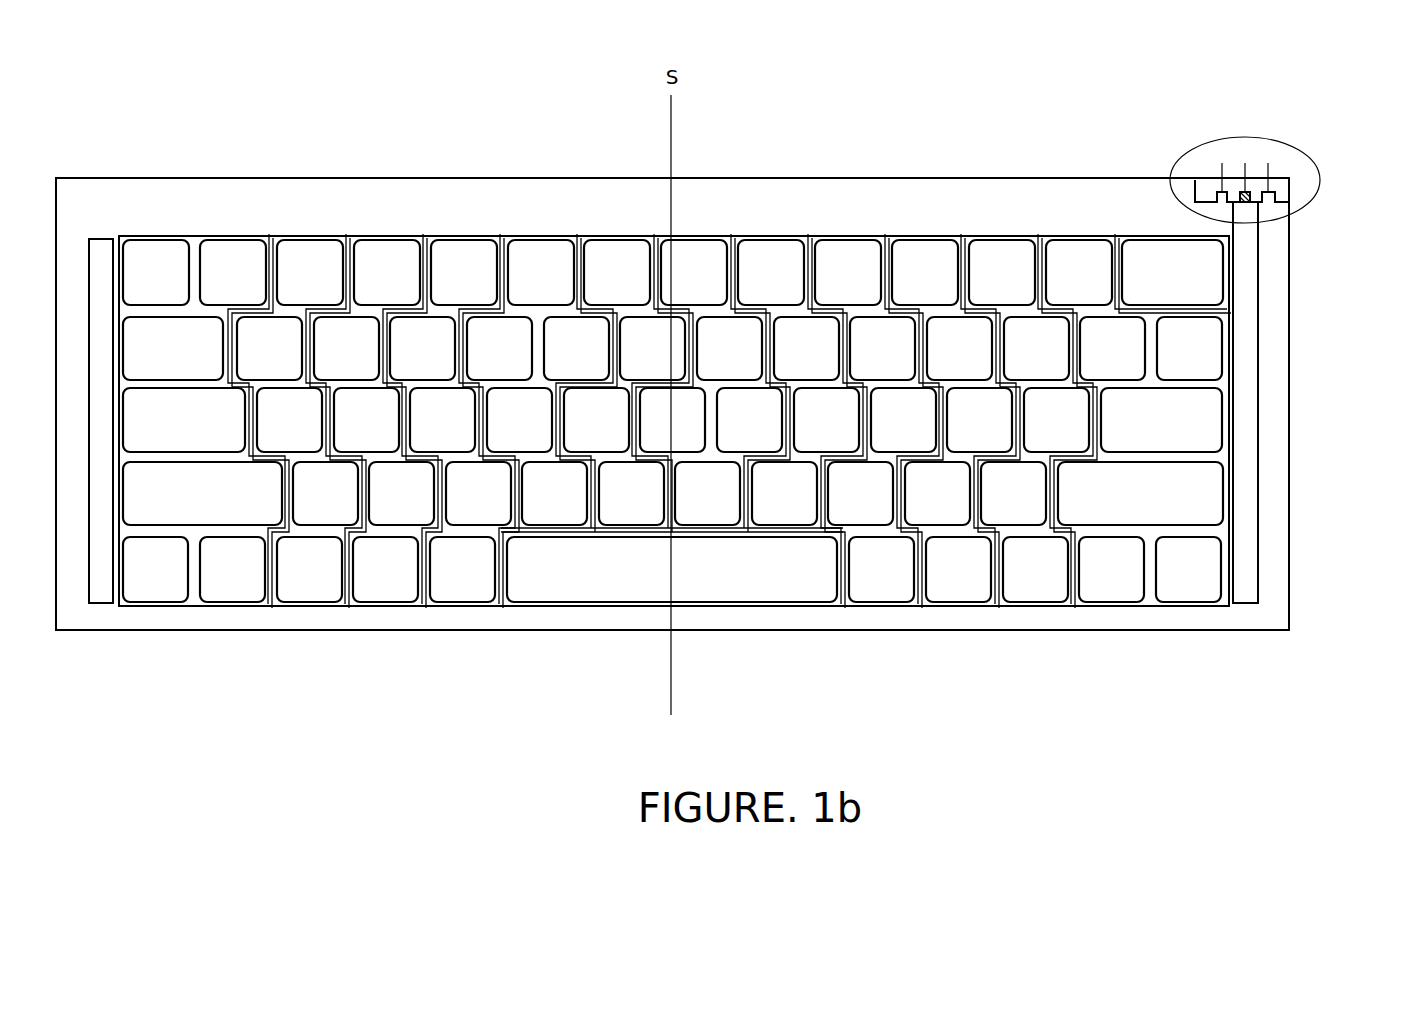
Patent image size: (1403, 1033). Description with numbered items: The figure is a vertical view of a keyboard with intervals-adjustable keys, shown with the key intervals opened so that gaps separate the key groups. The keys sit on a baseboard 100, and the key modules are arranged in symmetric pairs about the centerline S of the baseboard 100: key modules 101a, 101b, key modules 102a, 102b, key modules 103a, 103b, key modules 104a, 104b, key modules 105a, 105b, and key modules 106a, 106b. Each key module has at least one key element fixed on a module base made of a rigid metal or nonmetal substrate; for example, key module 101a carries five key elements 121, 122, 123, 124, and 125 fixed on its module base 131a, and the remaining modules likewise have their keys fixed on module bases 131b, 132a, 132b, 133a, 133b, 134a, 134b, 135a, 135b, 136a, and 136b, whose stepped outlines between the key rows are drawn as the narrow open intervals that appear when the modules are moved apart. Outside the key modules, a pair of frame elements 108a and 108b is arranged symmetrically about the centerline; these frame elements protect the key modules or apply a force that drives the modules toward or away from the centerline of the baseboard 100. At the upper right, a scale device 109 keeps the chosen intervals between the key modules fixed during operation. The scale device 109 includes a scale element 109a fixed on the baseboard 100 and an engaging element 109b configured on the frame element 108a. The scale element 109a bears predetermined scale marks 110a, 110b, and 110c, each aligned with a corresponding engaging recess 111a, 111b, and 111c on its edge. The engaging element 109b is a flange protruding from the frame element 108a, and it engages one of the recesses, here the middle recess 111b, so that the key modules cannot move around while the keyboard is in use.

The baseboard 100 is at (1283, 468).
The frame element 108a is at (1245, 590).
The frame element 108b is at (101, 588).
The key module 101a is at (707, 569).
The key module 101b is at (636, 513).
The key module 102a is at (785, 513).
The key module 102b is at (561, 513).
The key module 103a is at (882, 590).
The key module 103b is at (465, 590).
The key module 104a is at (960, 590).
The key module 104b is at (388, 590).
The key module 105a is at (1037, 590).
The key module 105b is at (312, 590).
The key module 106a is at (1182, 590).
The key module 106b is at (232, 590).
The key element 121 is at (674, 283).
The key element 122 is at (711, 359).
The key element 123 is at (653, 430).
The key element 124 is at (731, 430).
The key element 125 is at (707, 493).
The module base 131a is at (712, 236).
The module base 131b is at (612, 236).
The module base 132a is at (805, 236).
The module base 132b is at (537, 236).
The module base 133a is at (920, 236).
The module base 133b is at (460, 236).
The module base 134a is at (998, 236).
The module base 134b is at (383, 236).
The module base 135a is at (1073, 236).
The module base 135b is at (310, 236).
The module base 136a is at (1150, 236).
The module base 136b is at (190, 236).
The scale device 109 is at (1292, 154).
The scale element 109a is at (1300, 191).
The engaging element 109b is at (1262, 207).
The scale mark 110a is at (1222, 165).
The scale mark 110b is at (1245, 165).
The scale mark 110c is at (1268, 165).
The engaging recess 111a is at (1222, 206).
The engaging recess 111b is at (1250, 205).
The engaging recess 111c is at (1276, 204).